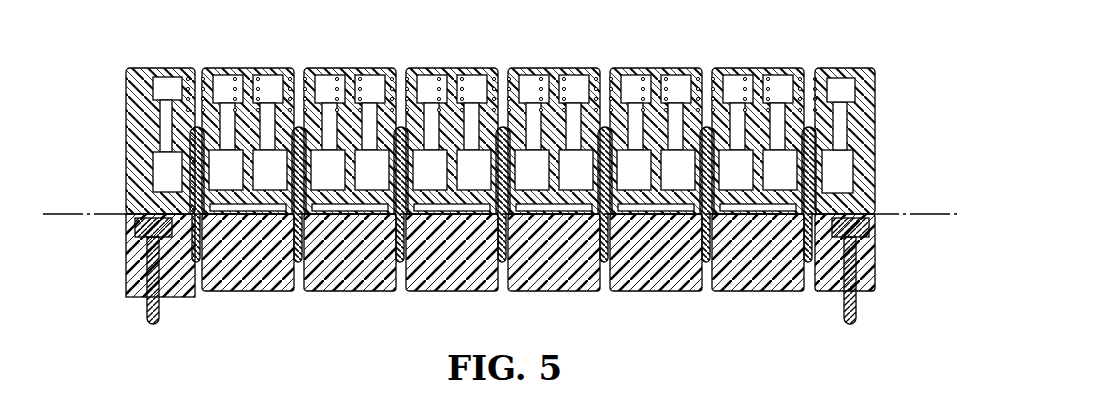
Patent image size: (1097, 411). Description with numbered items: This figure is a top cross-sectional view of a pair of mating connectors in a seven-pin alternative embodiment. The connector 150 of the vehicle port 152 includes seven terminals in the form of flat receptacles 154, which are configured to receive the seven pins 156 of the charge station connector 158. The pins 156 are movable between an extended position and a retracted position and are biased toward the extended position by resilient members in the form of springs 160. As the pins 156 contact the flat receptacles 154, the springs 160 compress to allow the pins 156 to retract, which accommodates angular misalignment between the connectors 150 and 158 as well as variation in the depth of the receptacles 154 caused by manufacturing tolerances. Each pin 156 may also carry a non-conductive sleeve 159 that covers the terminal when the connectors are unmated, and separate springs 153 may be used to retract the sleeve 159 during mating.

The connector 150 is at (126, 285).
The vehicle port 152 is at (578, 292).
The springs 153 is at (852, 90).
The receptacles 154 is at (802, 262).
The pins 156 is at (823, 178).
The charge station connector 158 is at (875, 83).
The non-conductive sleeve 159 is at (857, 123).
The springs 160 is at (806, 94).